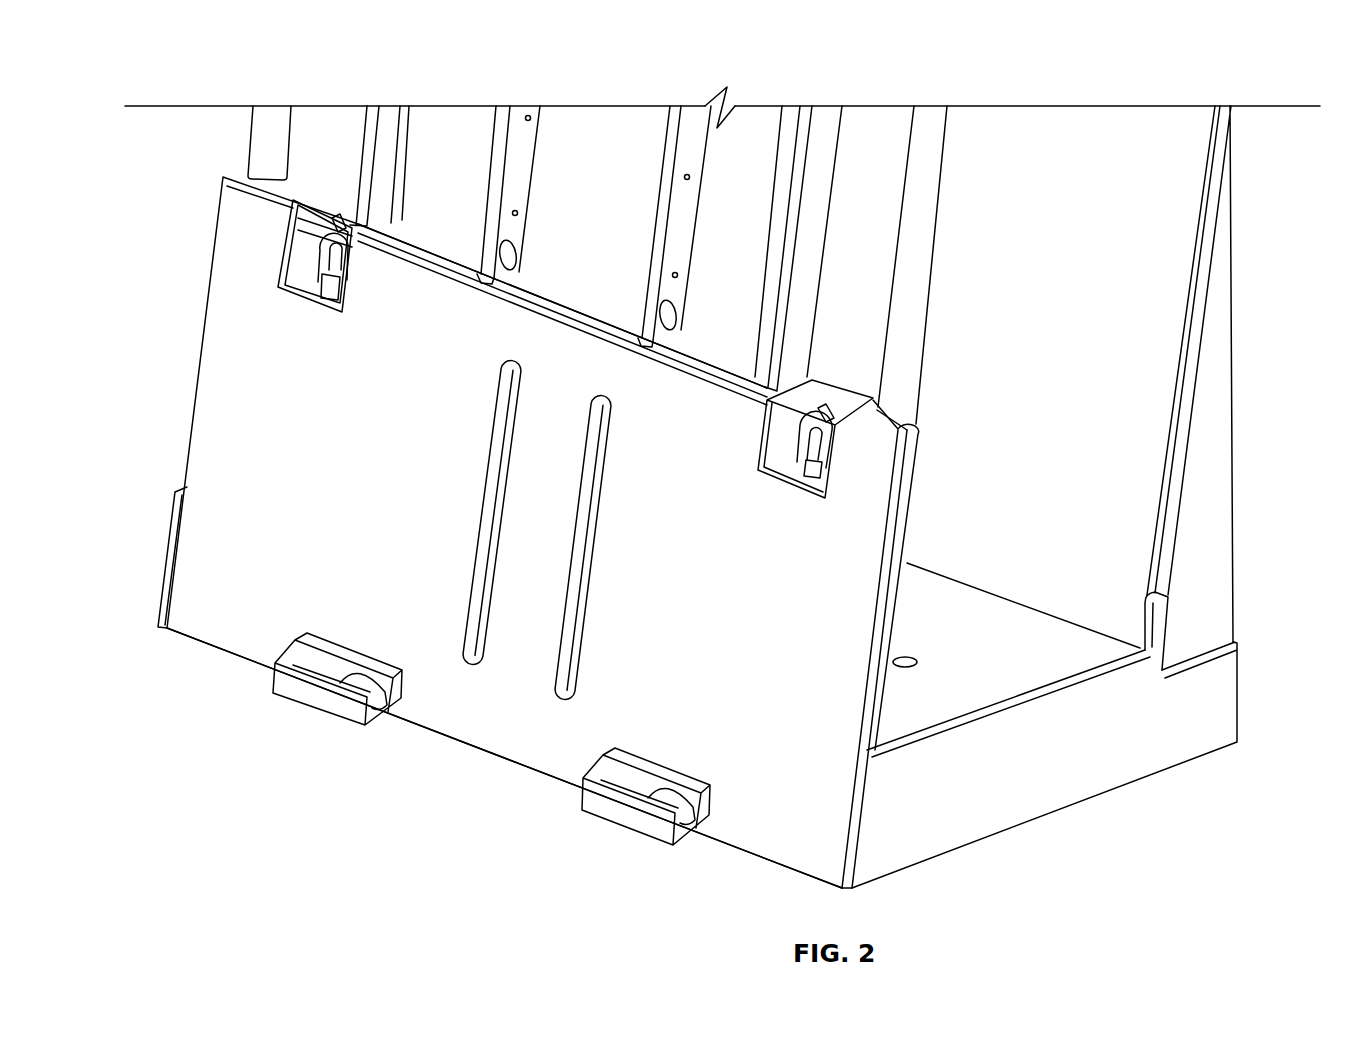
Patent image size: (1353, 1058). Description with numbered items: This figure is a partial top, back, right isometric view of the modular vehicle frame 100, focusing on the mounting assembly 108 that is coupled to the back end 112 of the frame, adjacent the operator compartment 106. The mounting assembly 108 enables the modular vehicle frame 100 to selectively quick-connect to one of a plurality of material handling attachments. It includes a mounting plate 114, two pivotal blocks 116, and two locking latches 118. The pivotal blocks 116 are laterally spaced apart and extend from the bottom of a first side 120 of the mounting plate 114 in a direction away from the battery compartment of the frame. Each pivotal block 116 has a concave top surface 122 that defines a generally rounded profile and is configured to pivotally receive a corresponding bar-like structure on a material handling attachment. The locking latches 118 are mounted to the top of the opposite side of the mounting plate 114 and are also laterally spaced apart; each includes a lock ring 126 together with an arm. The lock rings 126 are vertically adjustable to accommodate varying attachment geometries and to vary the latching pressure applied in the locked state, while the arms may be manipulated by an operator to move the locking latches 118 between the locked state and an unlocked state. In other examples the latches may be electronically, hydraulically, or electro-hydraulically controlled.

The modular vehicle frame 100 is at (178, 76).
The operator compartment 106 is at (1003, 647).
The mounting assembly 108 is at (176, 324).
The back end 112 is at (475, 857).
The mounting plate 114 is at (232, 418).
The pivotal blocks 116 is at (318, 696).
The locking latches 118 is at (338, 228).
The first side 120 is at (507, 732).
The concave top surface 122 is at (388, 703).
The lock ring 126 is at (320, 258).